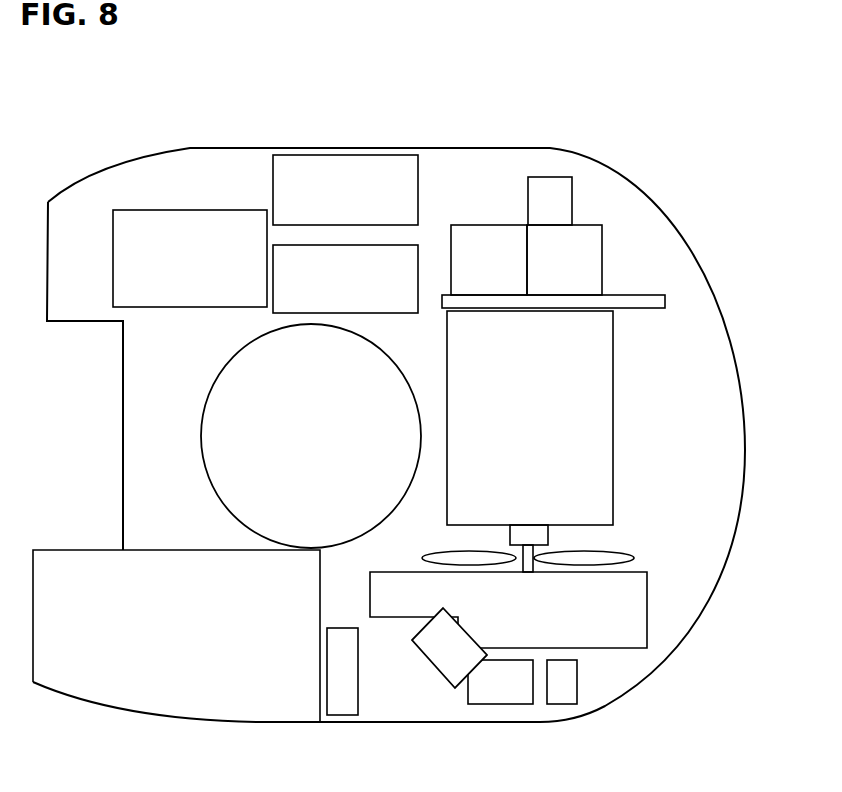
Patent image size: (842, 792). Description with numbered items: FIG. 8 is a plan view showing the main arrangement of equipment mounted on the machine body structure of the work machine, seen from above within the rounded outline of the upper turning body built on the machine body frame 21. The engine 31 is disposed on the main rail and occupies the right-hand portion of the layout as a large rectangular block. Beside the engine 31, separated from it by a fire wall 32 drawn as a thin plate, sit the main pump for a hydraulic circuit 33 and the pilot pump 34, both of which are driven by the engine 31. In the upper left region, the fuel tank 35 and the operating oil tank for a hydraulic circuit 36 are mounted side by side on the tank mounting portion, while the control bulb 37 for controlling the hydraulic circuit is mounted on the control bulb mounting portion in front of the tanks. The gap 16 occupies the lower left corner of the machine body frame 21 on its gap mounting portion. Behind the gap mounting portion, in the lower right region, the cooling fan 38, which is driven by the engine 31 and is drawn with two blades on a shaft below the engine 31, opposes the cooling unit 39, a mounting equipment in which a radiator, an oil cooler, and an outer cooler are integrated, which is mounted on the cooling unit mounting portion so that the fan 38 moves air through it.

The gap 16 is at (80, 680).
The machine body frame 21 is at (435, 707).
The engine 31 is at (590, 357).
The fire wall 32 is at (645, 292).
The main pump for a hydraulic circuit 33 is at (497, 257).
The pilot pump 34 is at (560, 192).
The fuel tank 35 is at (398, 178).
The operating oil tank for a hydraulic circuit 36 is at (333, 260).
The control bulb 37 is at (233, 222).
The cooling fan 38 is at (634, 560).
The cooling unit 39 is at (620, 625).